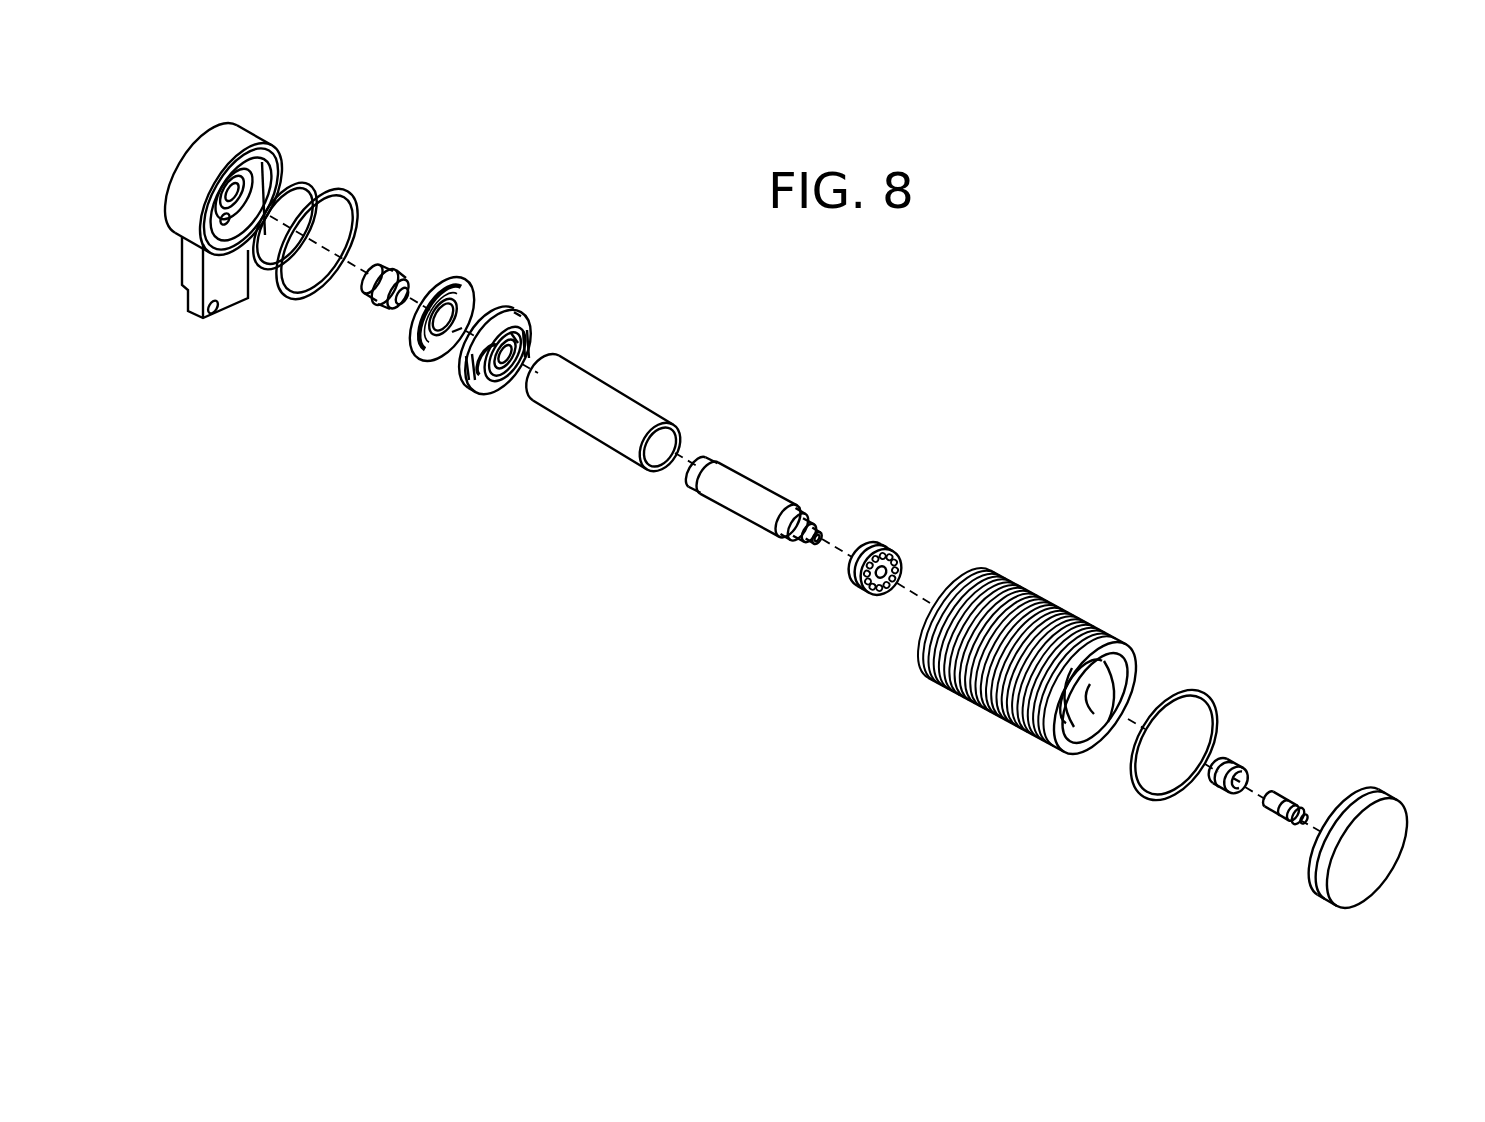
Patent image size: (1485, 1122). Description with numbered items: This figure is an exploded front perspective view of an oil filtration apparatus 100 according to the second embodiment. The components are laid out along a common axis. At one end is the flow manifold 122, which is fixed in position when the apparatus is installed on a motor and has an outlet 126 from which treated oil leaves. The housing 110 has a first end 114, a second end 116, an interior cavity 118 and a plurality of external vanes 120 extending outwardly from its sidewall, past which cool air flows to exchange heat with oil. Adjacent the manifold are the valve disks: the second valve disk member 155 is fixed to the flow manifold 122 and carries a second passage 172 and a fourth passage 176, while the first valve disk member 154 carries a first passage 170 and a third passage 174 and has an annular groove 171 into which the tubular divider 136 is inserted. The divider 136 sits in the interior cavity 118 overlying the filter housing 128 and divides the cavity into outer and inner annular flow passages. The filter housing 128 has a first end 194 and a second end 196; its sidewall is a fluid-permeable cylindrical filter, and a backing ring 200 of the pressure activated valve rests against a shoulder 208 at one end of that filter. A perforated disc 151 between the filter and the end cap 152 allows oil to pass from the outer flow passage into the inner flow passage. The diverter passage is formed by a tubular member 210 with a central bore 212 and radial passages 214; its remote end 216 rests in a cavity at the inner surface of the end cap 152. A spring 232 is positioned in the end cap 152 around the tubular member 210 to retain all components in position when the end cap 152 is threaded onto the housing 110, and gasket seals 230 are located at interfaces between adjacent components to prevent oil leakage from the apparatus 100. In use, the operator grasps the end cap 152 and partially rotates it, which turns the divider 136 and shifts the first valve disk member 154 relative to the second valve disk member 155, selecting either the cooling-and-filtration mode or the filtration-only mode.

The oil filtration apparatus 100 is at (1072, 437).
The housing 110 is at (1133, 596).
The first end 114 is at (1074, 685).
The second end 116 is at (1124, 656).
The interior cavity 118 is at (1088, 734).
The external vanes 120 is at (1058, 600).
The flow manifold 122 is at (232, 132).
The outlet 126 is at (404, 299).
The filter housing 128 is at (769, 506).
The tubular divider 136 is at (622, 398).
The perforated disc 151 is at (893, 546).
The end cap 152 is at (1398, 822).
The first valve disk member 154 is at (470, 375).
The second valve disk member 155 is at (450, 276).
The first passage 170 is at (502, 387).
The annular groove 171 is at (512, 385).
The second passage 172 is at (465, 292).
The third passage 174 is at (522, 345).
The fourth passage 176 is at (446, 312).
The first end 194 is at (700, 466).
The second end 196 is at (817, 542).
The backing ring 200 is at (1106, 688).
The shoulder 208 is at (1096, 746).
The tubular member 210 is at (1277, 833).
The central bore 212 is at (1303, 826).
The radial passages 214 is at (1284, 816).
The remote end 216 is at (1299, 806).
The gasket seals 230 is at (300, 190).
The spring 232 is at (1236, 766).